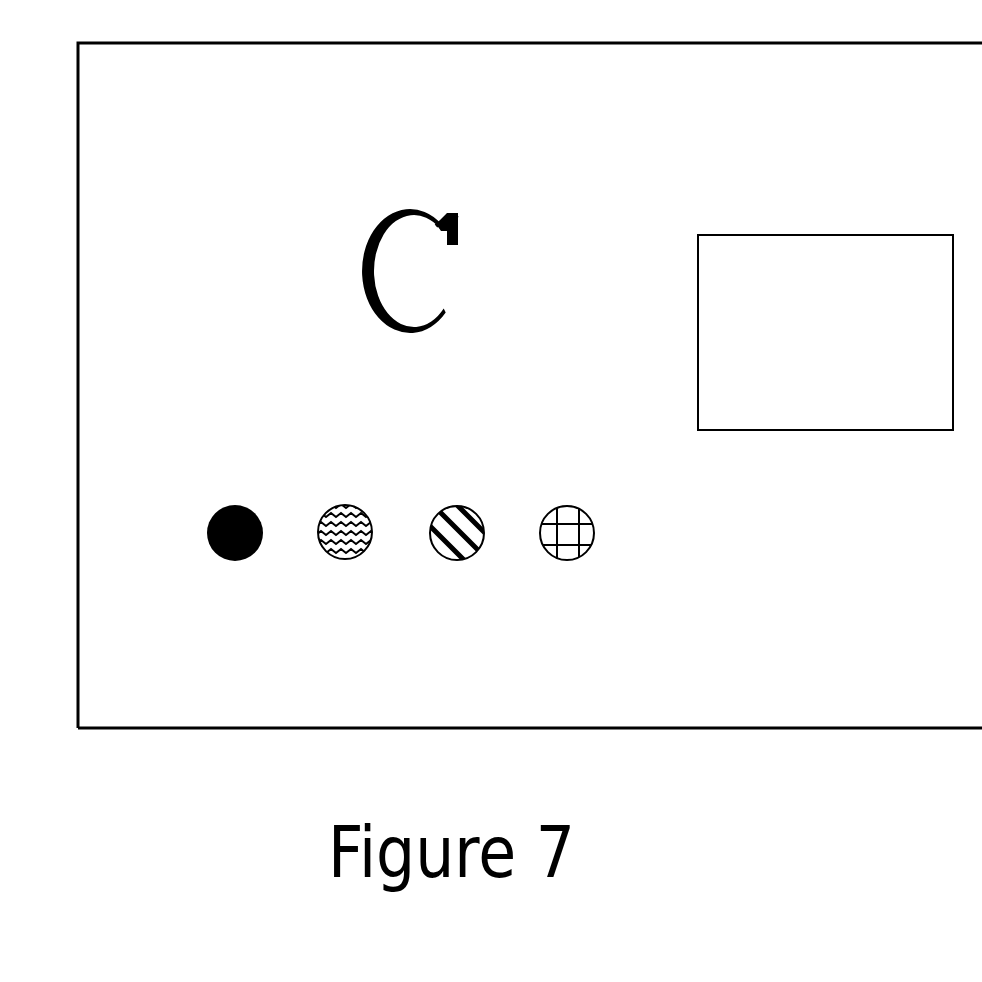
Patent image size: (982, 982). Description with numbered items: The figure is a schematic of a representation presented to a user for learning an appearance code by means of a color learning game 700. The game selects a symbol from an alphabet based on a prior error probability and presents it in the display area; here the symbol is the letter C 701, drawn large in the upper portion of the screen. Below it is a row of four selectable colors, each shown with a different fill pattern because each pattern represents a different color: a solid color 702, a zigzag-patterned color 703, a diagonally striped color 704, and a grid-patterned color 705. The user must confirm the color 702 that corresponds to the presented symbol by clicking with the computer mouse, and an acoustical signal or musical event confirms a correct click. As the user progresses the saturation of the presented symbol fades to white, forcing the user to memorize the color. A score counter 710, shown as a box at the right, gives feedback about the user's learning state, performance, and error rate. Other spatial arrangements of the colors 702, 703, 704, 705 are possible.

The color learning game 700 is at (815, 728).
The symbol 701 is at (393, 210).
The color 702 is at (223, 558).
The color 703 is at (345, 560).
The color 704 is at (458, 560).
The color 705 is at (575, 560).
The score counter 710 is at (912, 430).